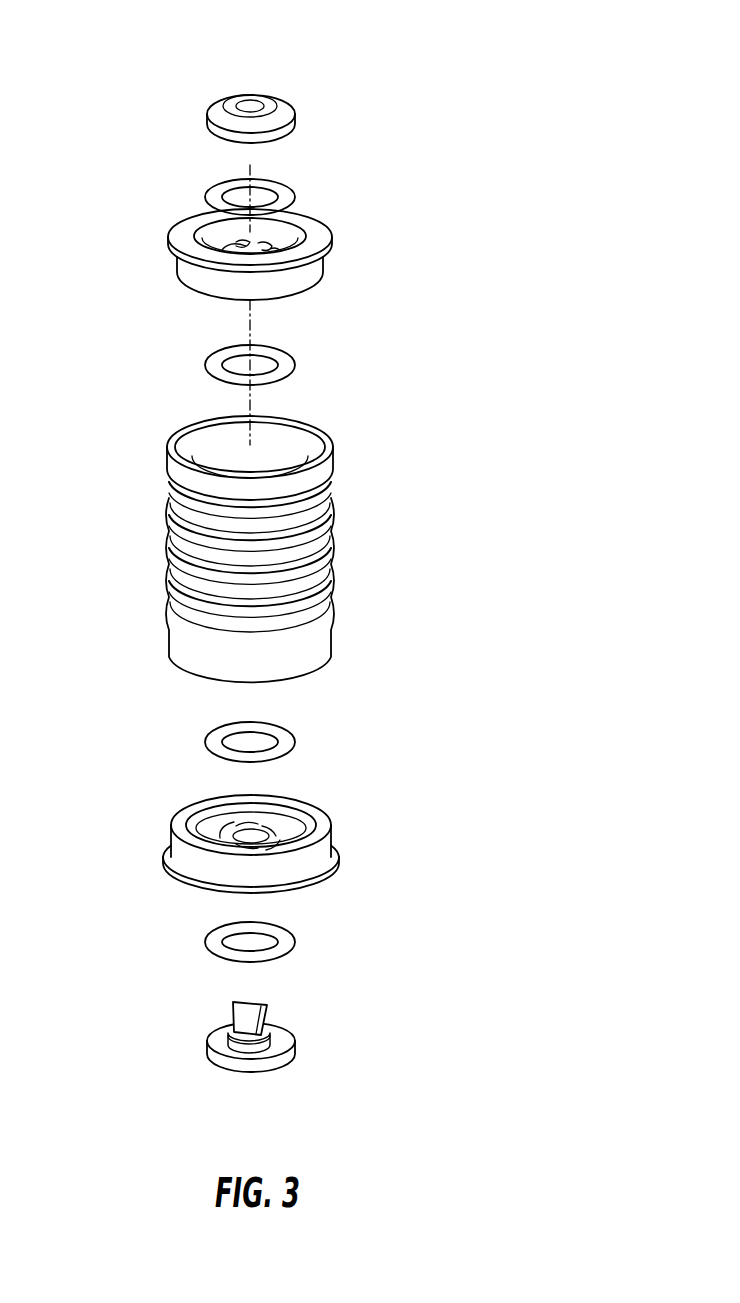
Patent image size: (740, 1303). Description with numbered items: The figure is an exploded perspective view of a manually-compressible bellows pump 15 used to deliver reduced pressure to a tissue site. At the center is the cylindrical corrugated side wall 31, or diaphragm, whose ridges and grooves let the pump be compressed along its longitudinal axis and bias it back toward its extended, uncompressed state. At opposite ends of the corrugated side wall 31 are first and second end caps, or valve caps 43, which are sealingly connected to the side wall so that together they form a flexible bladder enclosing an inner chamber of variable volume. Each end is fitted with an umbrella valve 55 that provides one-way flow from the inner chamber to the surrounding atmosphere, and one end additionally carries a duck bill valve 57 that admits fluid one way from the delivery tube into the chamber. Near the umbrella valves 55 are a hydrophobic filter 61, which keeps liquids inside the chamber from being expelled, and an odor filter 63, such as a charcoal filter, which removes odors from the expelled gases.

The bellows pump 15 is at (126, 44).
The corrugated side wall 31 is at (167, 472).
The valve cap 43 is at (175, 268).
The umbrella valve 55 is at (280, 97).
The duck bill valve 57 is at (232, 1017).
The hydrophobic filter 61 is at (275, 345).
The odor filter 63 is at (273, 176).